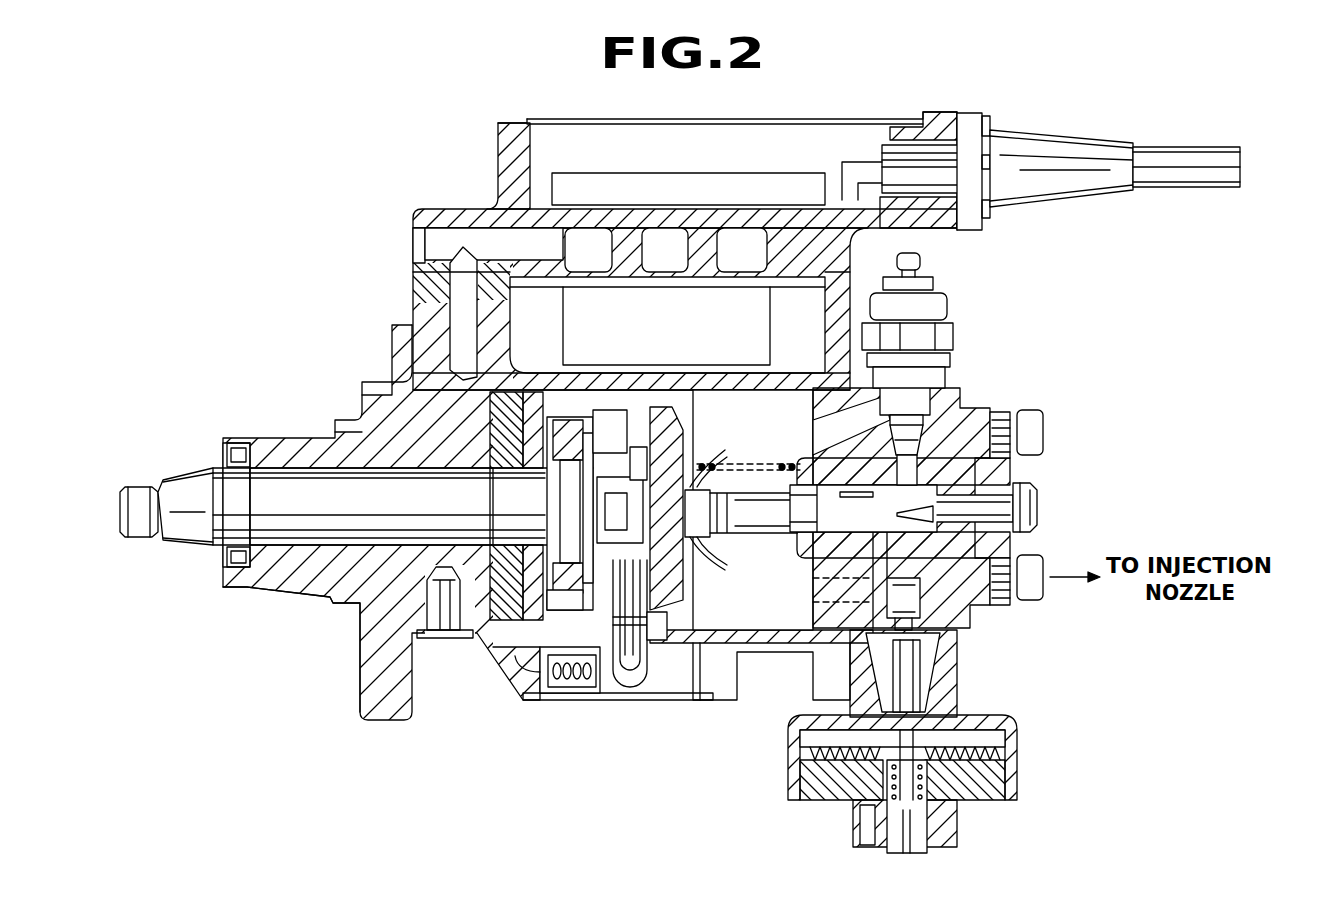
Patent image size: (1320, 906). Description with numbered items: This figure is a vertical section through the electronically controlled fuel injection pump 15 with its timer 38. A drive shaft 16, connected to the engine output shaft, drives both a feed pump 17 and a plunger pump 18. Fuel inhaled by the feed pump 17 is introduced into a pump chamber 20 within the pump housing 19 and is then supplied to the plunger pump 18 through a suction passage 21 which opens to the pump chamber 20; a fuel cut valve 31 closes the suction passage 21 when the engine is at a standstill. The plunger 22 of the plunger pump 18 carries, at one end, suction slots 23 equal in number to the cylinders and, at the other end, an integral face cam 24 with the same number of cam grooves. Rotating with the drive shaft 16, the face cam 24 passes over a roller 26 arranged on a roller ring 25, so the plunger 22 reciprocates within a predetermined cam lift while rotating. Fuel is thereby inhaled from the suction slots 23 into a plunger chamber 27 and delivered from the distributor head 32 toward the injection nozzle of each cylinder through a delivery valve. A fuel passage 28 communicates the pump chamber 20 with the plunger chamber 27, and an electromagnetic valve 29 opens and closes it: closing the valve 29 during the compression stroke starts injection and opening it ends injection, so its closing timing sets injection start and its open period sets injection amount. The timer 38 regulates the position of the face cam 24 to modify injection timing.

The fuel injection pump 15 is at (660, 453).
The drive shaft 16 is at (312, 537).
The feed pump 17 is at (515, 578).
The plunger pump 18 is at (897, 520).
The pump housing 19 is at (347, 597).
The pump chamber 20 is at (757, 615).
The suction passage 21 is at (865, 425).
The plunger 22 is at (900, 458).
The suction slots 23 is at (967, 553).
The face cam 24 is at (660, 628).
The roller ring 25 is at (617, 600).
The roller 26 is at (642, 608).
The plunger chamber 27 is at (937, 512).
The fuel passage 28 is at (920, 625).
The electromagnetic valve 29 is at (1005, 783).
The fuel cut valve 31 is at (940, 305).
The distributor head 32 is at (932, 592).
The timer 38 is at (578, 690).